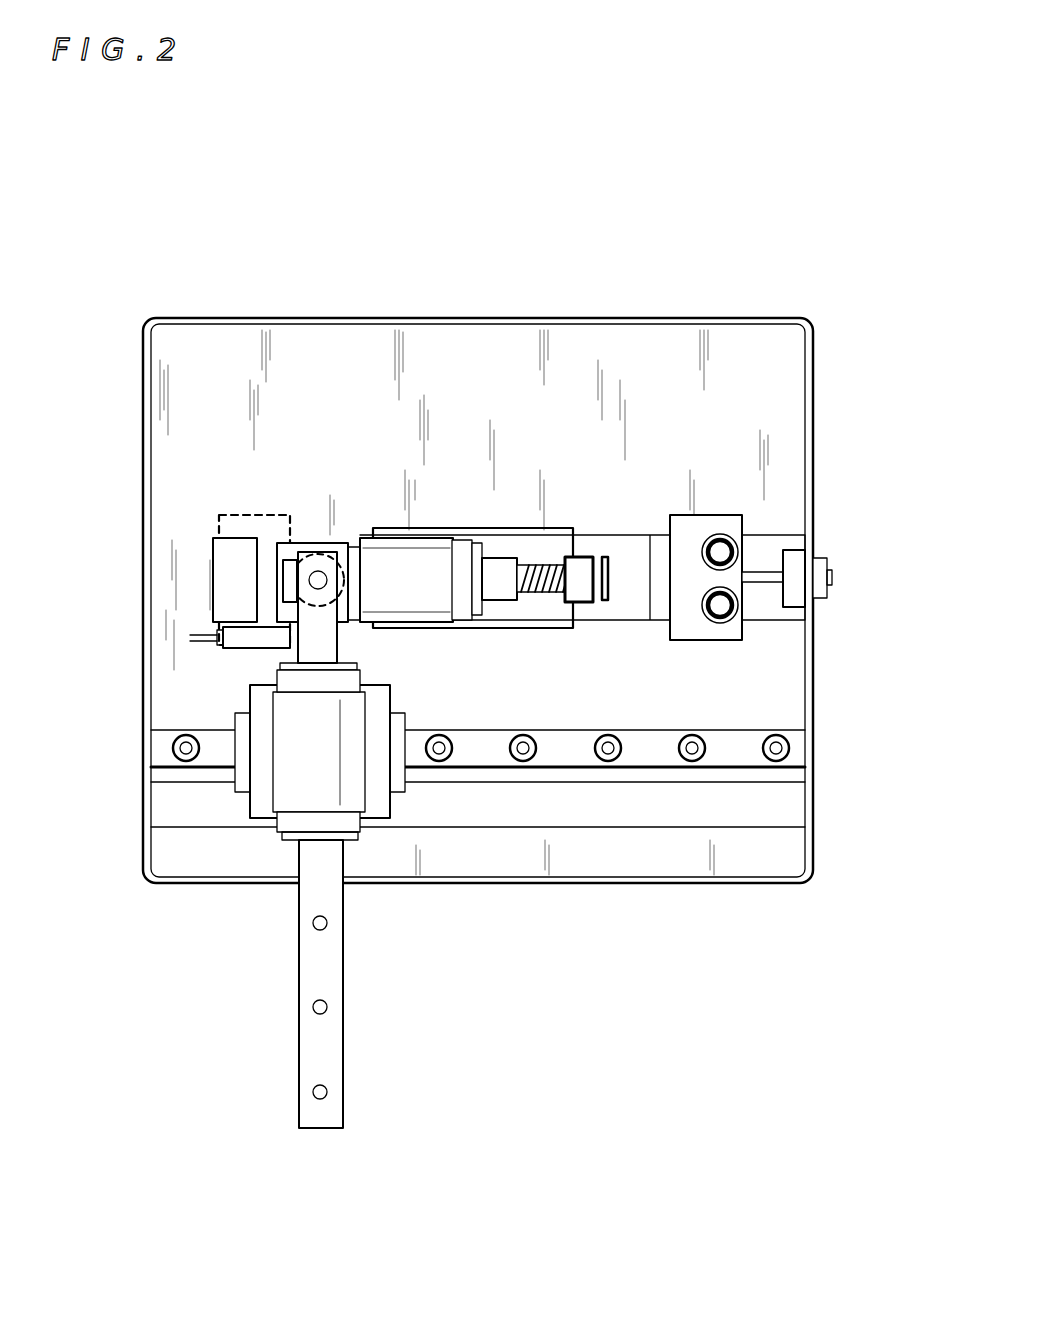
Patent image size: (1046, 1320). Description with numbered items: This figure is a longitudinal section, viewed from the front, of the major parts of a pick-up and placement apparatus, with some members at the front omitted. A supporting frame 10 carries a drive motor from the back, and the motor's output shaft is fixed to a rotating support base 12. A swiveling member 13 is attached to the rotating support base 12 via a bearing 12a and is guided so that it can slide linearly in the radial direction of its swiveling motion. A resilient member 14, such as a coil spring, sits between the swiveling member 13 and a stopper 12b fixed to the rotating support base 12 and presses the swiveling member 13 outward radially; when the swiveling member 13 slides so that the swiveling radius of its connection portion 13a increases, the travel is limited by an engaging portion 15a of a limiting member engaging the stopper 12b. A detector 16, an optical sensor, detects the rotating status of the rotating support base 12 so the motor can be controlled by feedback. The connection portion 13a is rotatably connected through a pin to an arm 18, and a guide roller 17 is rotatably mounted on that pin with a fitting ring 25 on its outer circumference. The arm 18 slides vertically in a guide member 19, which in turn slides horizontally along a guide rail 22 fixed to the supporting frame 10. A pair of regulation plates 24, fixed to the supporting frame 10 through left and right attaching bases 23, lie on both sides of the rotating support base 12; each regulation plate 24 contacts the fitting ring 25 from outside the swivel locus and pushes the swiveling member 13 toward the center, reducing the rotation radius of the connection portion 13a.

The supporting frame 10 is at (760, 404).
The rotating support base 12 is at (560, 528).
The bearing 12a is at (400, 546).
The stopper 12b is at (585, 542).
The swiveling member 13 is at (500, 600).
The connection portion 13a is at (288, 590).
The resilient member 14 is at (535, 560).
The engaging portion 15a is at (605, 600).
The detector 16 is at (240, 650).
The guide roller 17 is at (340, 623).
The arm 18 is at (343, 965).
The guide member 19 is at (268, 818).
The guide rail 22 is at (667, 767).
The attaching base 23 is at (213, 578).
The regulation plate 24 is at (722, 642).
The fitting ring 25 is at (294, 578).